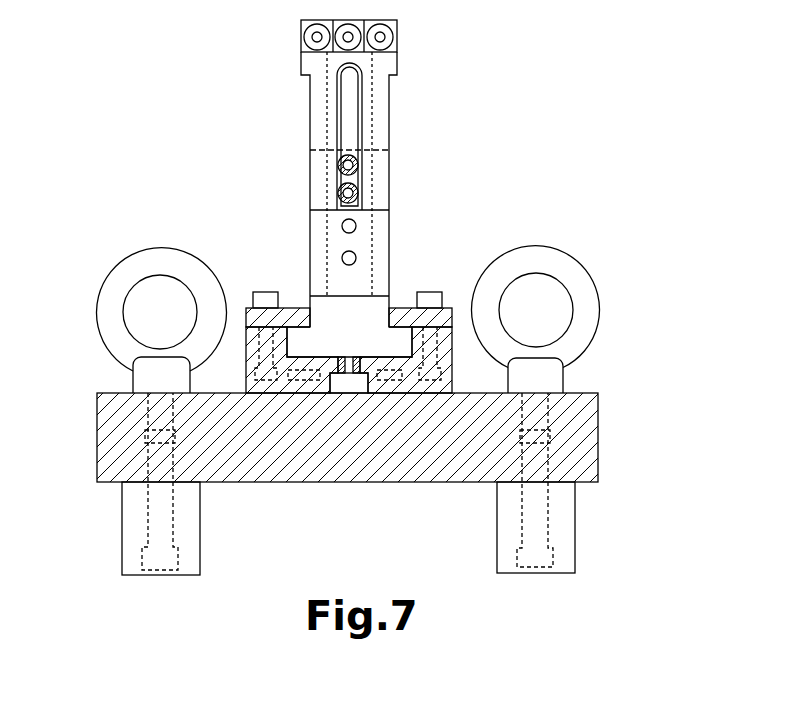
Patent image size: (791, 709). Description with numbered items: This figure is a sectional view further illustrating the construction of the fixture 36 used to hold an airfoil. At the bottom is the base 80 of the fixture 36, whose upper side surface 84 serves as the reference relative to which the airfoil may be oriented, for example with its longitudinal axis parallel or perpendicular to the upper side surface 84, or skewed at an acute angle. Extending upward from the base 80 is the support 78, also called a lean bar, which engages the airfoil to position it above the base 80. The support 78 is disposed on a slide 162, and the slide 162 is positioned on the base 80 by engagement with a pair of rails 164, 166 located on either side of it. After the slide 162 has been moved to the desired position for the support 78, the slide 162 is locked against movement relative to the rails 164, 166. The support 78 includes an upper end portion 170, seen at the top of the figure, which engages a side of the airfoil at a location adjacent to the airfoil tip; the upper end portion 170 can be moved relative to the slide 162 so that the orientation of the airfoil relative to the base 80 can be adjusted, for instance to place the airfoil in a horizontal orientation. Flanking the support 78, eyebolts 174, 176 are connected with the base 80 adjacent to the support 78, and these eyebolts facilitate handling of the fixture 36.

The fixture 36 is at (603, 172).
The support 78 is at (398, 53).
The upper end portion 170 is at (302, 37).
The slide 162 is at (367, 317).
The rail 164 is at (290, 305).
The rail 166 is at (447, 318).
The eyebolt 174 is at (113, 293).
The eyebolt 176 is at (600, 296).
The base 80 is at (578, 430).
The upper side surface 84 is at (117, 392).